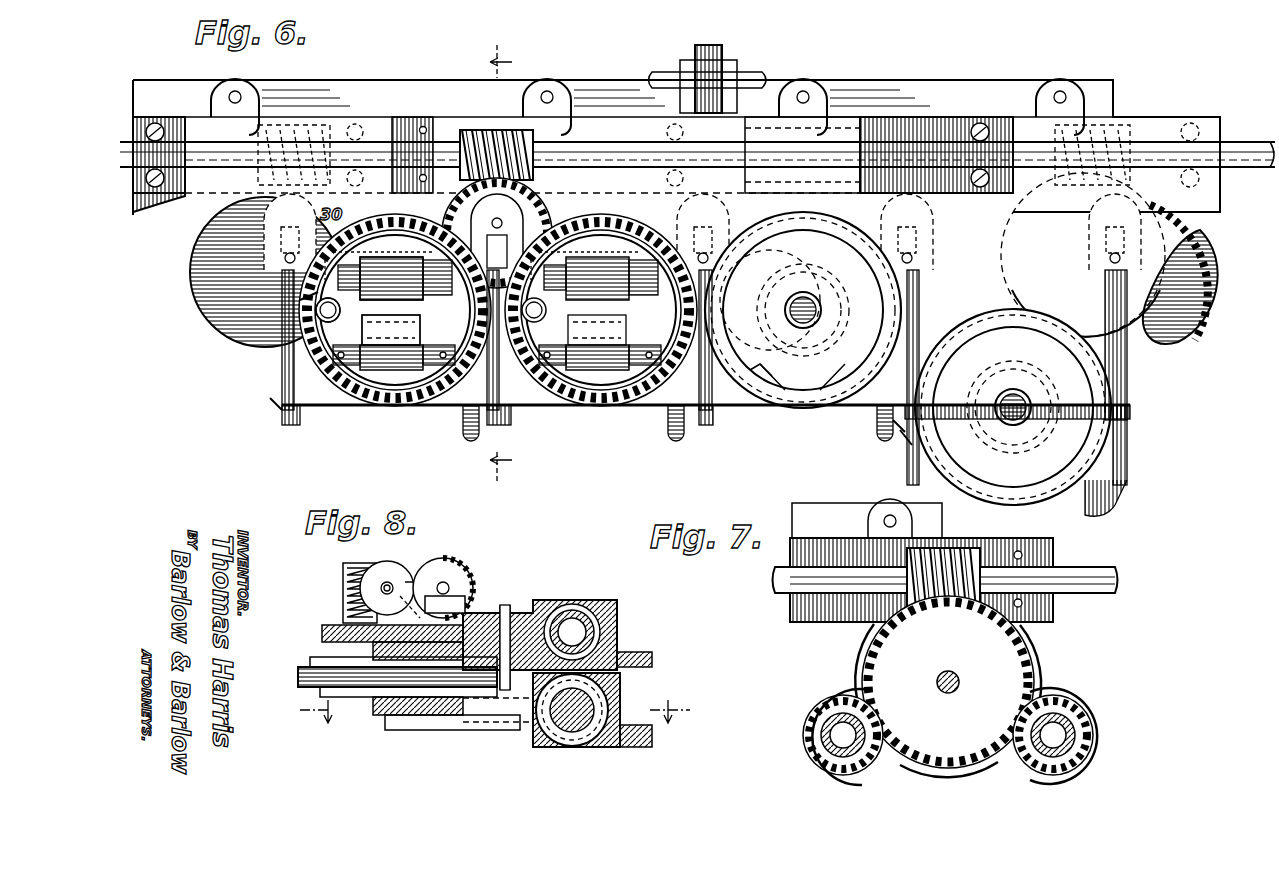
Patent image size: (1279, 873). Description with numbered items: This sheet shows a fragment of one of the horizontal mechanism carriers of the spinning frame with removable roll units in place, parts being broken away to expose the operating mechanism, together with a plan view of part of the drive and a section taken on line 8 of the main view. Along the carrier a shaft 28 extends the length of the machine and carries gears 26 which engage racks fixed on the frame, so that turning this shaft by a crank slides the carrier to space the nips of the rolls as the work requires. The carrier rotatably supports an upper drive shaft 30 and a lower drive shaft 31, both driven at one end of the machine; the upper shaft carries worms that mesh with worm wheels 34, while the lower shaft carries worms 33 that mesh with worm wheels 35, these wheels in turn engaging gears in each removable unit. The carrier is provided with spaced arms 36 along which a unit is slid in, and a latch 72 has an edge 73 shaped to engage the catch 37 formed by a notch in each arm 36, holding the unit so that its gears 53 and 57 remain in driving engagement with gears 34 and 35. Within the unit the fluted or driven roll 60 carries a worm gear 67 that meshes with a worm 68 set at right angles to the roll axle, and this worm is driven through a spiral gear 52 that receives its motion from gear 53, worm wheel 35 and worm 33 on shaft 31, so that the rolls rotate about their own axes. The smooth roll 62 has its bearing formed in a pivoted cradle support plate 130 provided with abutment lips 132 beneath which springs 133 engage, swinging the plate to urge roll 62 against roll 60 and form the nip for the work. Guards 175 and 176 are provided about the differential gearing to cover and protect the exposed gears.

In FIG. 6, the section line 8— 8 is at (500, 261).
In FIG. 6, the gear 26 is at (720, 50).
In FIG. 6, the shaft 28 is at (740, 75).
In FIG. 6, the upper drive shaft 30 is at (1020, 148).
In FIG. 8, the upper drive shaft 30 is at (348, 565).
In FIG. 6, the lower drive shaft 31 is at (1245, 150).
In FIG. 7, the lower drive shaft 31 is at (1088, 575).
In FIG. 8, the lower drive shaft 31 is at (598, 705).
In FIG. 6, the worm 33 is at (485, 130).
In FIG. 7, the worm 33 is at (950, 552).
In FIG. 6, the worm wheel 34 is at (962, 258).
In FIG. 8, the worm wheel 34 is at (495, 613).
In FIG. 6, the worm wheel 35 is at (235, 315).
In FIG. 7, the worm wheel 35 is at (1000, 672).
In FIG. 6, the arm 36 is at (288, 428).
In FIG. 8, the arm 36 is at (308, 688).
In FIG. 6, the catch 37 is at (280, 413).
In FIG. 8, the spiral gear 52 is at (373, 650).
In FIG. 7, the gear 53 is at (1078, 730).
In FIG. 8, the gear 53 is at (380, 712).
In FIG. 6, the gear 57 is at (405, 400).
In FIG. 8, the gear 57 is at (325, 633).
In FIG. 6, the fluted roll 60 is at (612, 242).
In FIG. 8, the fluted roll 60 is at (470, 578).
In FIG. 6, the smooth roll 62 is at (380, 325).
In FIG. 8, the smooth roll 62 is at (403, 573).
In FIG. 6, the worm gear 67 is at (300, 305).
In FIG. 6, the worm 68 is at (318, 318).
In FIG. 6, the latch 72 is at (470, 432).
In FIG. 6, the edge 73 is at (900, 440).
In FIG. 6, the cradle support plate 130 is at (400, 342).
In FIG. 6, the abutment lip 132 is at (365, 345).
In FIG. 8, the spring 133 is at (350, 592).
In FIG. 7, the guard 175 is at (860, 652).
In FIG. 7, the guard 176 is at (1085, 712).